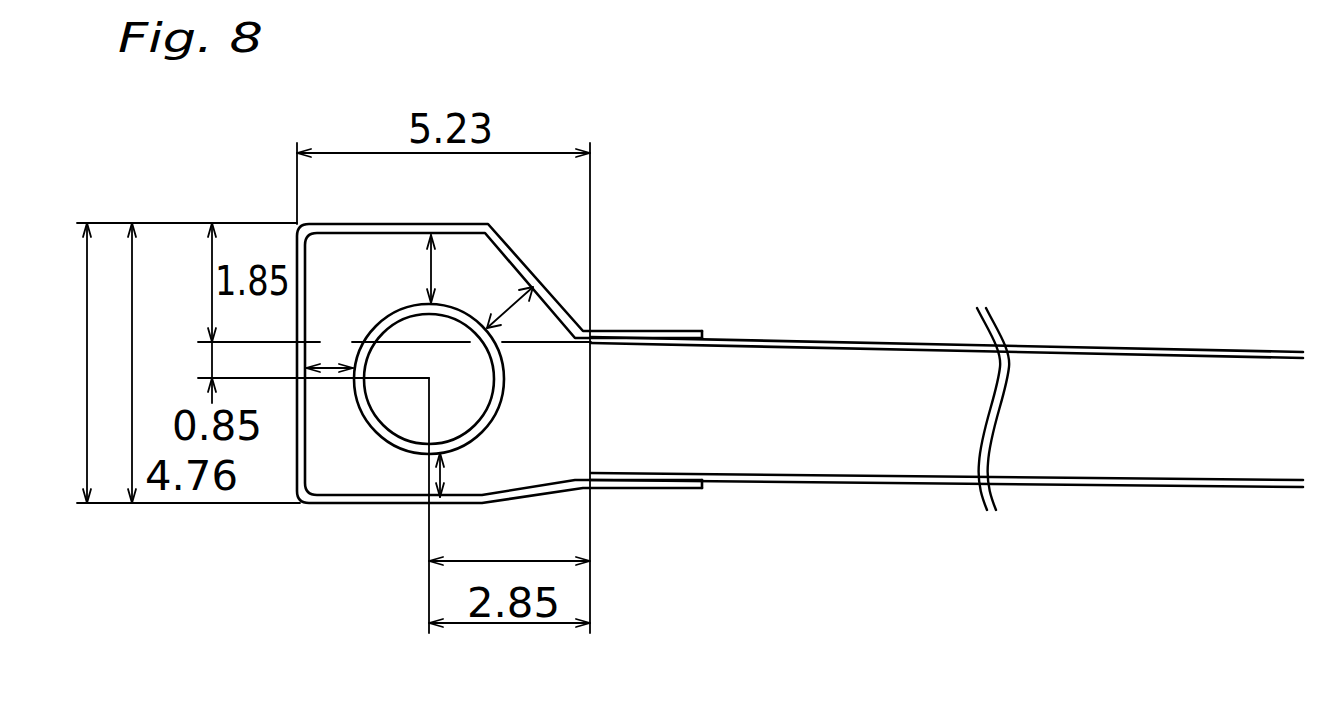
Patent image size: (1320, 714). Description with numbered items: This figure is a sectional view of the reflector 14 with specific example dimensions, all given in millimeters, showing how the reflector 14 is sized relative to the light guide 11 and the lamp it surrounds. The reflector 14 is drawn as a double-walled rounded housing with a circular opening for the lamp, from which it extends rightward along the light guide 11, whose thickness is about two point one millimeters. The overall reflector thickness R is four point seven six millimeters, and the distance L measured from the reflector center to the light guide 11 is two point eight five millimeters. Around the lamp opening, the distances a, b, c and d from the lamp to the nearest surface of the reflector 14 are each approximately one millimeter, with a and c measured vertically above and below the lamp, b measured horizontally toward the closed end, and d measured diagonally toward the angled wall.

The light guide 11 is at (863, 422).
The reflector 14 is at (337, 502).
The reflector thickness R is at (102, 363).
The distance from reflector center to light guide L is at (509, 541).
The distance from lamp to reflector surface a is at (445, 269).
The distance from lamp to reflector surface b is at (329, 344).
The distance from lamp to reflector surface c is at (453, 470).
The distance from lamp to reflector surface d is at (506, 299).